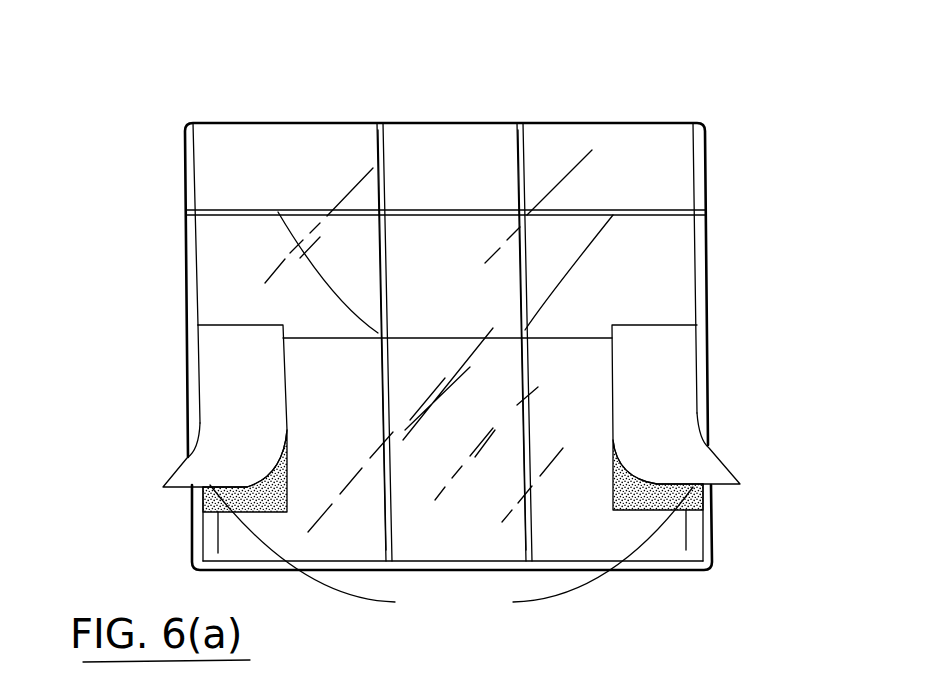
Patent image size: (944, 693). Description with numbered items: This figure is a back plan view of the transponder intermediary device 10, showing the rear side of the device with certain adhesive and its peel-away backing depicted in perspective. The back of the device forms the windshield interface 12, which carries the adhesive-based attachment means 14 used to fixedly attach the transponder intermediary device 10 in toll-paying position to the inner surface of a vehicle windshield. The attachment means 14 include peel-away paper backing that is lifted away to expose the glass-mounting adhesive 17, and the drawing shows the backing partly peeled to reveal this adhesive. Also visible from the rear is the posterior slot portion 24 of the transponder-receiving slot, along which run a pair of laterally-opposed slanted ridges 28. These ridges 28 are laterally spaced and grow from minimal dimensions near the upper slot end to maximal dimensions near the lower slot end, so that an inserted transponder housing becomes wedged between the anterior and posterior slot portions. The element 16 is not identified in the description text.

The transponder intermediary device 10 is at (687, 97).
The windshield interface 12 is at (617, 268).
The adhesive-based attachment means 14 is at (163, 392).
The bottom panel 16 is at (515, 692).
The glass-mounting adhesive 17 is at (207, 503).
The posterior slot portion 24 is at (318, 148).
The slanted ridges 28 is at (517, 167).